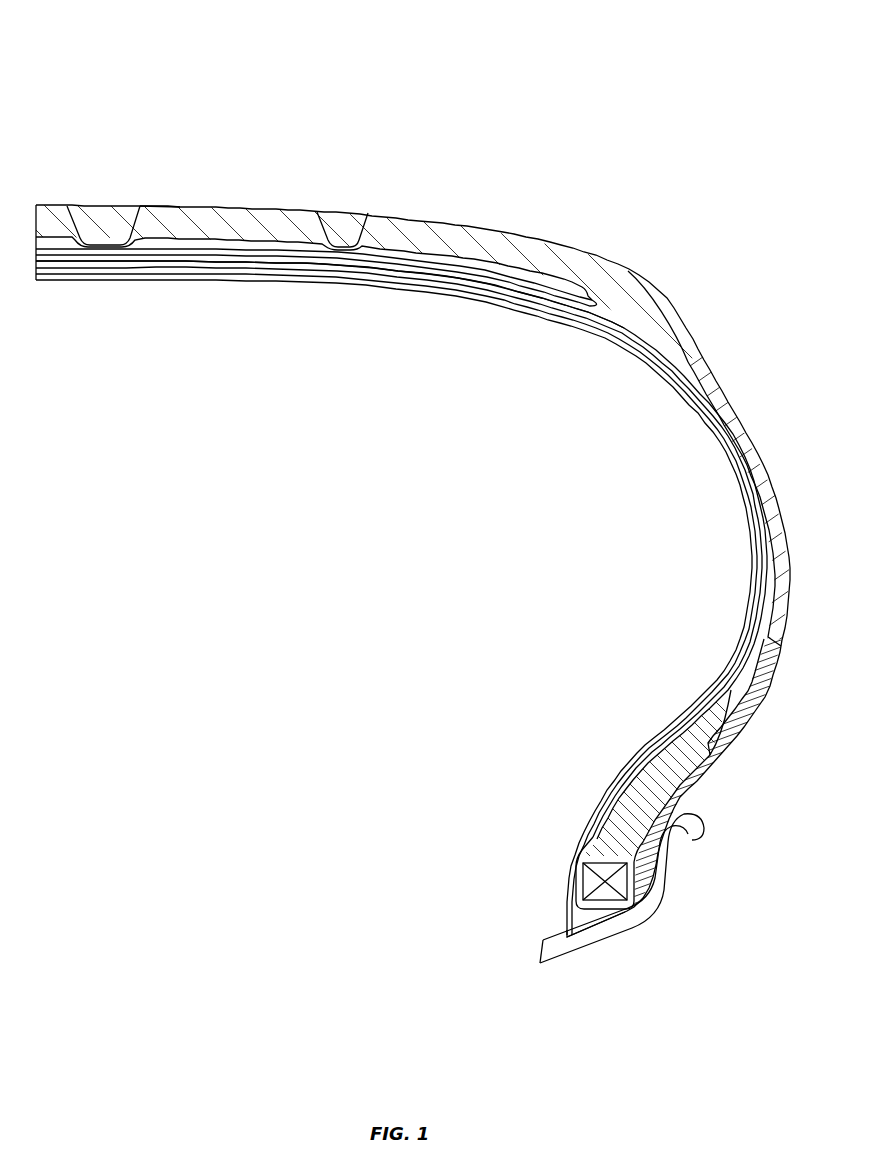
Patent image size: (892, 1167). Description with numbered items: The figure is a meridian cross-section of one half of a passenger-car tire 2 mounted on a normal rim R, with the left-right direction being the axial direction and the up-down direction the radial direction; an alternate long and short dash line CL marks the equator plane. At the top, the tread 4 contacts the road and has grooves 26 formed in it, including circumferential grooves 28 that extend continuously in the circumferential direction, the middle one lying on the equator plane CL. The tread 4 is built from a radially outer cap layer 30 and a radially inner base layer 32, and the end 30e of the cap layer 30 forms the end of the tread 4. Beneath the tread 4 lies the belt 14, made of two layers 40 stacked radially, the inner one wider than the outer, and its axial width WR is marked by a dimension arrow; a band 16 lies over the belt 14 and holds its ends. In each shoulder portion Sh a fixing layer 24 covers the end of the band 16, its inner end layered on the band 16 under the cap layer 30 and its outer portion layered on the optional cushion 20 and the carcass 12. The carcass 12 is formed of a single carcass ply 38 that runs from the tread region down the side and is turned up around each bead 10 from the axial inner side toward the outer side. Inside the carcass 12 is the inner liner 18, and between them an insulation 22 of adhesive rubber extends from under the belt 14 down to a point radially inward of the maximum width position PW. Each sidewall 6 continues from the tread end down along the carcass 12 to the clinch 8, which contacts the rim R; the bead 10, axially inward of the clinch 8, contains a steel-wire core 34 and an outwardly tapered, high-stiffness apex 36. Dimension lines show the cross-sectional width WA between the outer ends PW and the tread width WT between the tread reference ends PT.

The tire 2 is at (711, 146).
The tread 4 is at (457, 213).
The sidewall 6 is at (758, 454).
The clinch 8 is at (682, 797).
The bead 10 is at (506, 848).
The carcass 12 is at (190, 294).
The belt 14 is at (353, 385).
The band 16 is at (409, 251).
The inner liner 18 is at (738, 557).
The cushion 20 is at (596, 312).
The insulation 22 is at (742, 485).
The fixing layer 24 is at (676, 315).
The groove 26 is at (133, 205).
The circumferential groove 28 is at (325, 210).
The cap layer 30 is at (478, 238).
The end of cap layer 30e is at (702, 372).
The base layer 32 is at (245, 242).
The core 34 is at (580, 882).
The apex 36 is at (598, 835).
The carcass ply 38 is at (133, 283).
The layer 40 is at (318, 262).
The rim R is at (652, 940).
The outer end / maximum width position PW is at (791, 556).
The tread reference end PT is at (652, 285).
The shoulder portion Sh is at (676, 280).
The equator plane CL is at (104, 985).
The cross-sectional width WA is at (787, 490).
The tread width WT is at (648, 280).
The axial width of belt WR is at (620, 485).